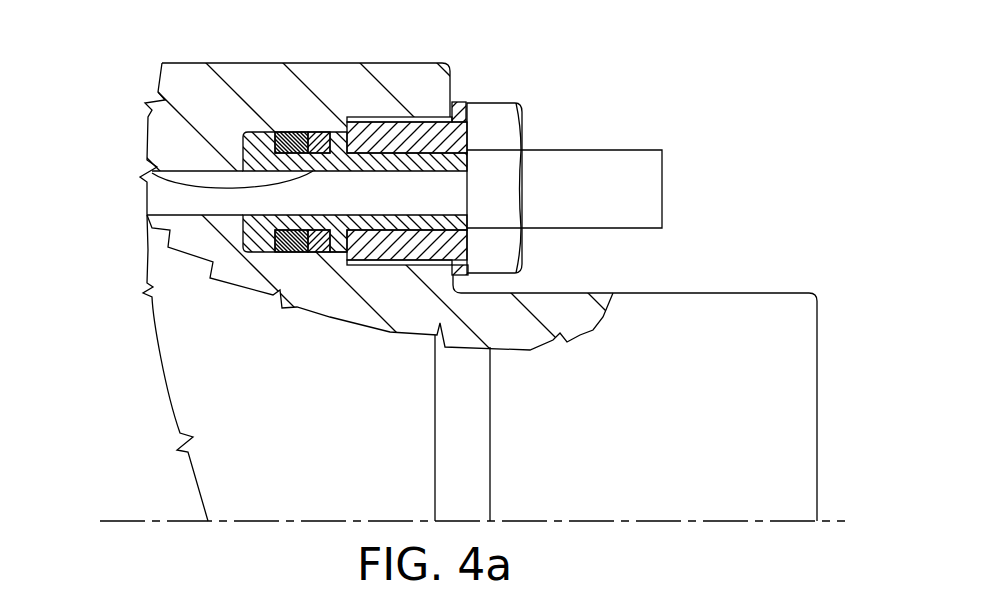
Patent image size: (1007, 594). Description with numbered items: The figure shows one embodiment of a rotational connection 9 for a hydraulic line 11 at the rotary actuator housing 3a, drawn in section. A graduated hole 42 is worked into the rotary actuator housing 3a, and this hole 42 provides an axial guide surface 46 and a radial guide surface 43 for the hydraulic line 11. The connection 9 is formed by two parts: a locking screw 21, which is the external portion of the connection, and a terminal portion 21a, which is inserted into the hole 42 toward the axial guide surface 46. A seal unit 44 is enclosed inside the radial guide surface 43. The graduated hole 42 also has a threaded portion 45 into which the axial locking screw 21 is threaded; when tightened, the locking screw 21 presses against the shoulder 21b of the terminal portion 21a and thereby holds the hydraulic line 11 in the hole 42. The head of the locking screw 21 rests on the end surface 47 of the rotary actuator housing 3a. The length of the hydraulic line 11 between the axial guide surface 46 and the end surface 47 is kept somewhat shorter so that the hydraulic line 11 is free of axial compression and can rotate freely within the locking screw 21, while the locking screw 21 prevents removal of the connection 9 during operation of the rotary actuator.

The rotary actuator housing 3a is at (410, 82).
The rotational connection 9 is at (558, 124).
The hydraulic line 11 is at (650, 176).
The locking screw 21 is at (493, 117).
The terminal portion 21a is at (152, 173).
The shoulder 21b is at (340, 254).
The graduated hole 42 is at (262, 140).
The radial guide surface 43 is at (336, 135).
The seal unit 44 is at (292, 140).
The threaded portion 45 is at (427, 118).
The axial guide surface 46 is at (243, 152).
The end surface 47 is at (455, 102).